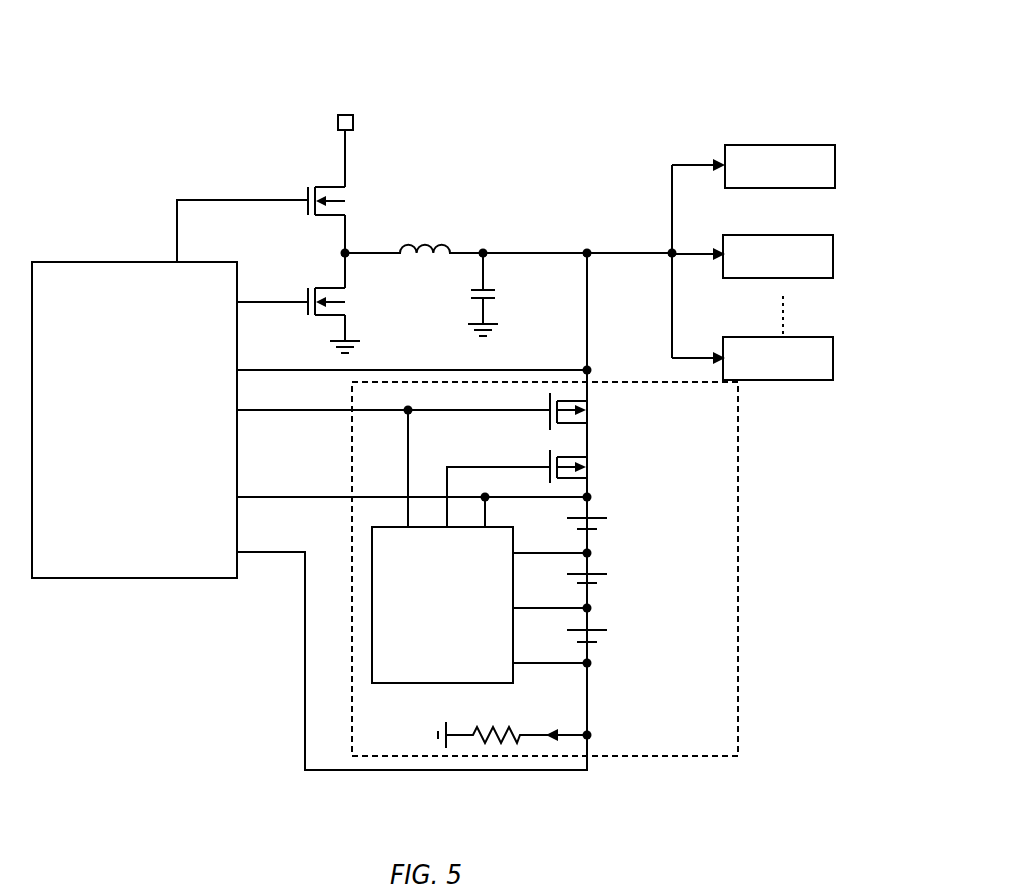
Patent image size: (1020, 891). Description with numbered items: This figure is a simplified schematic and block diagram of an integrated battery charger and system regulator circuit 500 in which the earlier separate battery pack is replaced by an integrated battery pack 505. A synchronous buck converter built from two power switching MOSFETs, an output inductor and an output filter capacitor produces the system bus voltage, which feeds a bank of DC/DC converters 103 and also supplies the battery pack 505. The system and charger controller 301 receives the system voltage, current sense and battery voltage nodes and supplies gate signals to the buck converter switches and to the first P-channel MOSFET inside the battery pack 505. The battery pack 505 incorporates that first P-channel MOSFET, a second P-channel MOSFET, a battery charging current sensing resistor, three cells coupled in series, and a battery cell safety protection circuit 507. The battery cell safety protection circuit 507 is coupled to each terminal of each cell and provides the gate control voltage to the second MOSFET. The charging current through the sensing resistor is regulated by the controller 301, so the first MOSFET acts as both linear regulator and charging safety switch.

The integrated battery charger and system regulator circuit 500 is at (252, 66).
The DC/DC converters 103 is at (775, 98).
The system and charger controller 301 is at (138, 485).
The integrated battery pack 505 is at (735, 653).
The battery cell safety protection circuit 507 is at (437, 683).